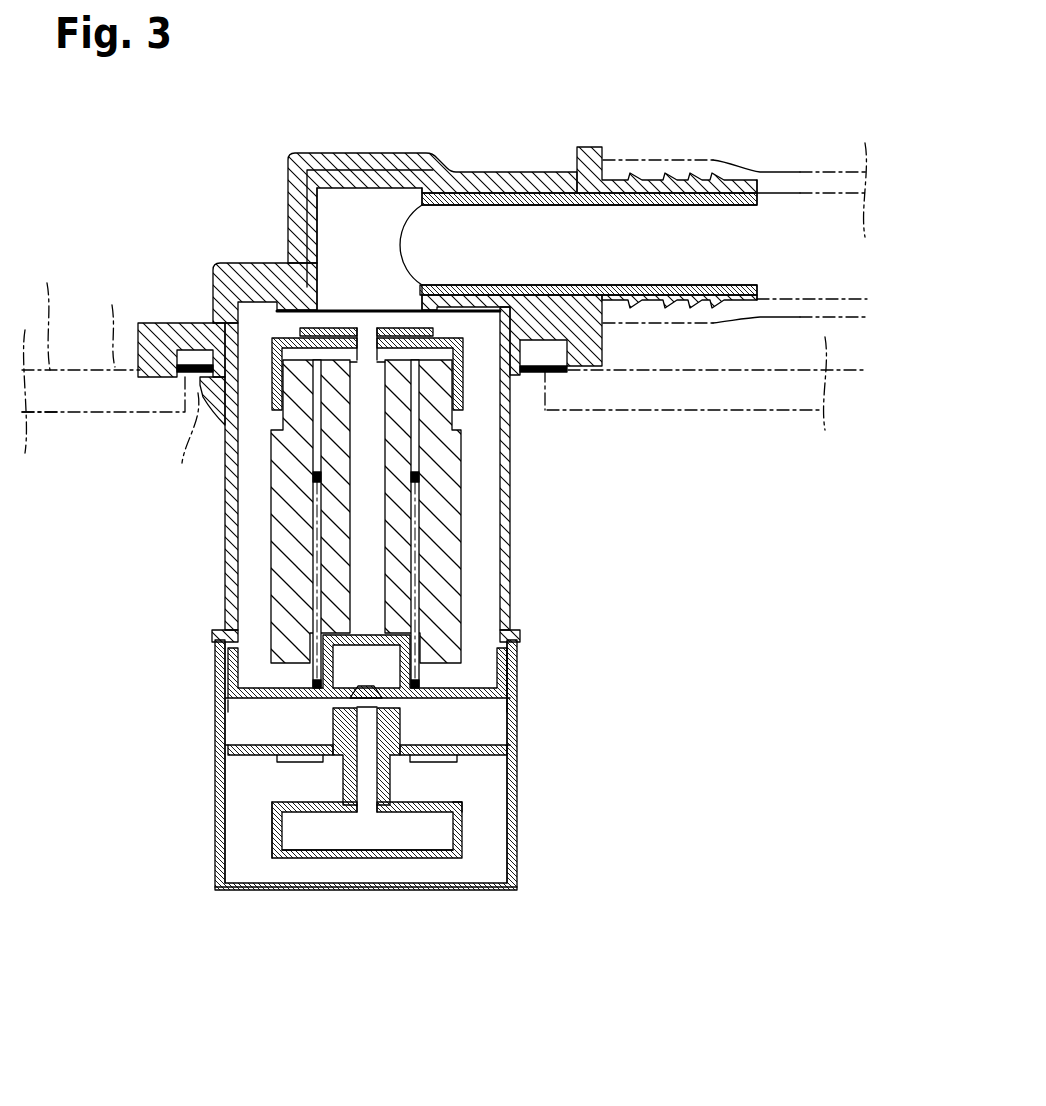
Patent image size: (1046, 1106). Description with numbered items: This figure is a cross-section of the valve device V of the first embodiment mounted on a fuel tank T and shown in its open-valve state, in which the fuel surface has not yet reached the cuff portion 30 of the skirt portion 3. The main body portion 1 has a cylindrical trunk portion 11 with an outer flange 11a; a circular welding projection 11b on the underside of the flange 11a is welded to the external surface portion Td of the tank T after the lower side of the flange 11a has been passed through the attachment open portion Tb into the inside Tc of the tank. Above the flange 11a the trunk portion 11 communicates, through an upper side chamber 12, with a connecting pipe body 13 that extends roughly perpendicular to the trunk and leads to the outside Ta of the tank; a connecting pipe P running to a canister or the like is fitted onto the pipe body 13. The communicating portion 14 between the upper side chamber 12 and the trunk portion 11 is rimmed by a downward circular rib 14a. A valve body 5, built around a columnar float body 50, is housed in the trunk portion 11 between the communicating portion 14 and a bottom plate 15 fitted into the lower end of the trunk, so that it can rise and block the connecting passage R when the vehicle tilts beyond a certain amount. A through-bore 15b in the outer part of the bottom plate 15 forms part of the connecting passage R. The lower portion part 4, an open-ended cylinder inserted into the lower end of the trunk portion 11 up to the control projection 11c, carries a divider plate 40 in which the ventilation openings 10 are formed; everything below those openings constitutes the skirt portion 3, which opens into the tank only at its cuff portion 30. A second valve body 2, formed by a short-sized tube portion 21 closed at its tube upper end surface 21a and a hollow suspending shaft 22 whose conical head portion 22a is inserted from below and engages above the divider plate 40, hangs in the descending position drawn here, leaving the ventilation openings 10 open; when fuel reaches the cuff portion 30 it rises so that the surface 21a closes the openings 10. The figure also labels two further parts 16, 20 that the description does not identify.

The main body portion 1 is at (507, 570).
The valve body 2 is at (268, 822).
The skirt portion 3 is at (517, 860).
The lower portion part 4 is at (517, 823).
The valve body 5 is at (438, 508).
The float body 50 is at (455, 463).
The ventilation openings 10 is at (433, 763).
The trunk portion 11 is at (507, 540).
The flange 11a is at (163, 322).
The welding projection 11b is at (147, 383).
The control projection 11c is at (220, 640).
The upper side chamber 12 is at (345, 207).
The connecting pipe body 13 is at (658, 183).
The communicating portion 14 is at (367, 290).
The circular rib 14a is at (282, 315).
The bottom plate 15 is at (465, 687).
The through-bore 15b is at (228, 713).
The chamber 16 is at (248, 723).
The float body 20 is at (305, 847).
The short-sized tube portion 21 is at (412, 850).
The tube upper end surface 21a is at (470, 797).
The suspending shaft 22 is at (340, 780).
The head portion 22a is at (385, 703).
The cuff portion 30 is at (357, 885).
The divider plate 40 is at (222, 785).
The connecting passage R is at (500, 222).
The connecting pipe P is at (803, 210).
The fuel tank T is at (40, 312).
The outside of the fuel tank Ta is at (94, 232).
The attachment open portion Tb is at (175, 447).
The inside of the fuel tank Tc is at (98, 567).
The external surface portion Td is at (115, 317).
The valve device V is at (366, 118).